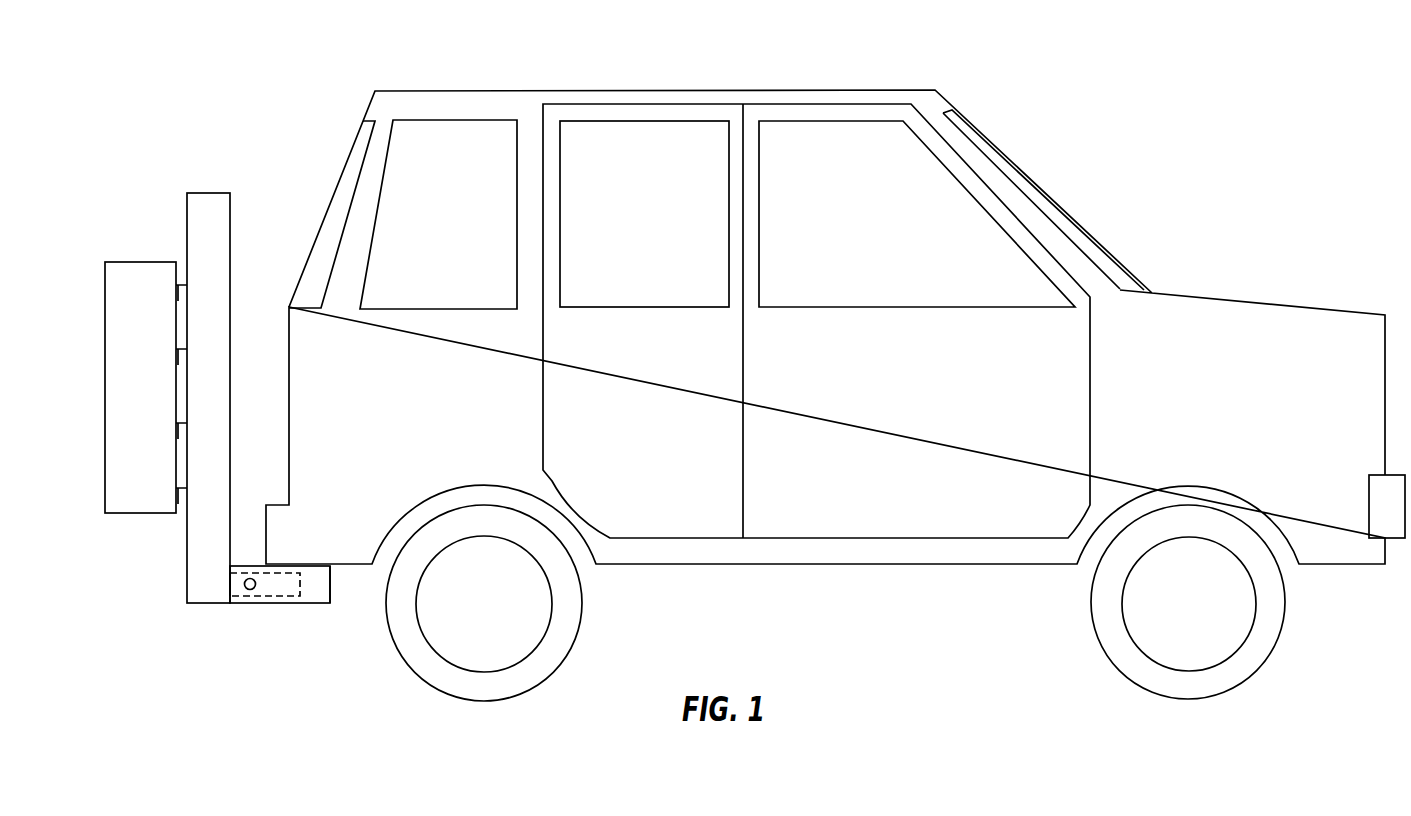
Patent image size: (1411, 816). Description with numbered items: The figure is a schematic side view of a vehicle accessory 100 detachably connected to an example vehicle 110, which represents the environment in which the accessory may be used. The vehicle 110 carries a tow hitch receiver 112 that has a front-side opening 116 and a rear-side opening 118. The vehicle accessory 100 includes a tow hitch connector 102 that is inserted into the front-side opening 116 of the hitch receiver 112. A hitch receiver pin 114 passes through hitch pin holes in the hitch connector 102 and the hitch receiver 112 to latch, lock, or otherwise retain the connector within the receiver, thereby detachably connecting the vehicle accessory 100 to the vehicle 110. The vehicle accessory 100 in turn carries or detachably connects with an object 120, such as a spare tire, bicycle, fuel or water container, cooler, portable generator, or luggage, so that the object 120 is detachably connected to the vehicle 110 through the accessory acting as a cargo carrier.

The vehicle 110 is at (410, 86).
The vehicle accessory 100 is at (207, 190).
The object 120 is at (129, 259).
The tow hitch receiver 112 is at (307, 607).
The tow hitch connector 102 is at (276, 599).
The hitch receiver pin 114 is at (251, 591).
The front-side opening 116 is at (230, 585).
The rear-side opening 118 is at (333, 583).